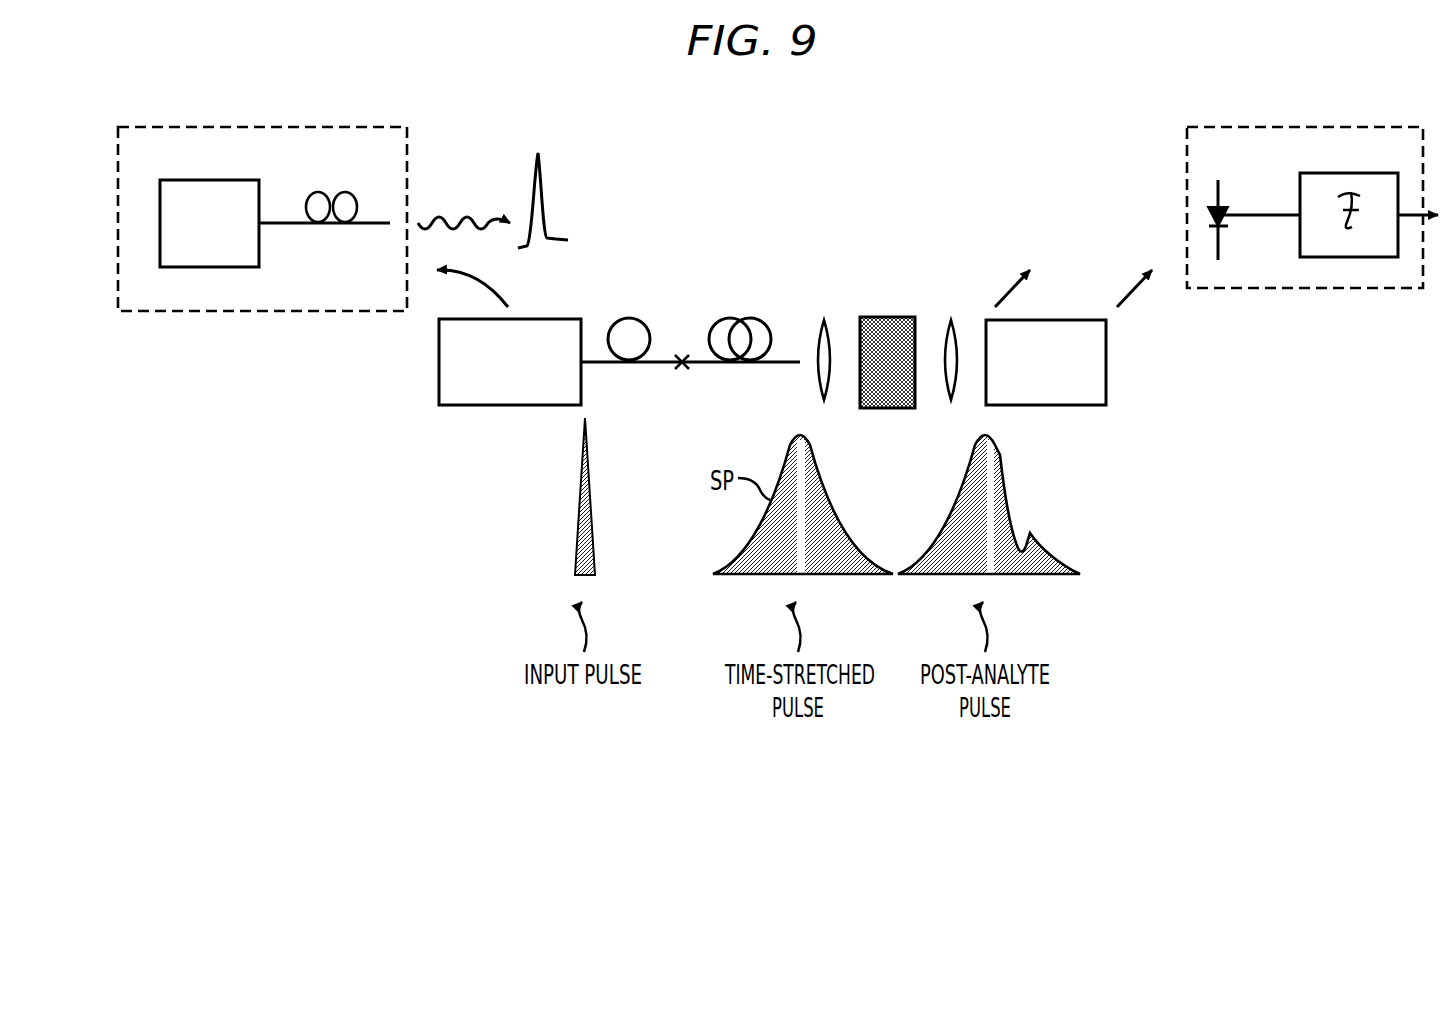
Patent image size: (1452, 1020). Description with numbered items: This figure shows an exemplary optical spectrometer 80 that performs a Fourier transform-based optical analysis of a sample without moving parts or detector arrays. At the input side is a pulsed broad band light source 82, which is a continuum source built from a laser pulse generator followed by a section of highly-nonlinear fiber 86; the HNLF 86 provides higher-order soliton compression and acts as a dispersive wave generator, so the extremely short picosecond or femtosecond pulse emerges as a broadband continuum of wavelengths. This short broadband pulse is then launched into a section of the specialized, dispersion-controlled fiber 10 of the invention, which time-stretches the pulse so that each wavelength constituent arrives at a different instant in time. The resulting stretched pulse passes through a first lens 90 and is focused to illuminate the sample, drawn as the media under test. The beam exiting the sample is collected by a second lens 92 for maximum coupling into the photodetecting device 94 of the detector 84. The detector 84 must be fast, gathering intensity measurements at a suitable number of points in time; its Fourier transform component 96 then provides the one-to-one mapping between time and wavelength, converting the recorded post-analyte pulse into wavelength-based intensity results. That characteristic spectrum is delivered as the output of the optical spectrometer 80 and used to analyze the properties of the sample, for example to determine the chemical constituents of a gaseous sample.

The optical spectrometer 80 is at (938, 218).
The pulsed broad band light source 82 is at (355, 125).
The detector 84 is at (331, 224).
The highly-nonlinear fiber (HNLF) 86 is at (205, 180).
The dispersion-controlled fiber 10 is at (735, 364).
The first lens 90 is at (826, 400).
The second lens 92 is at (948, 400).
The photodetecting device 94 is at (1222, 208).
The Fourier transform component 96 is at (1343, 173).